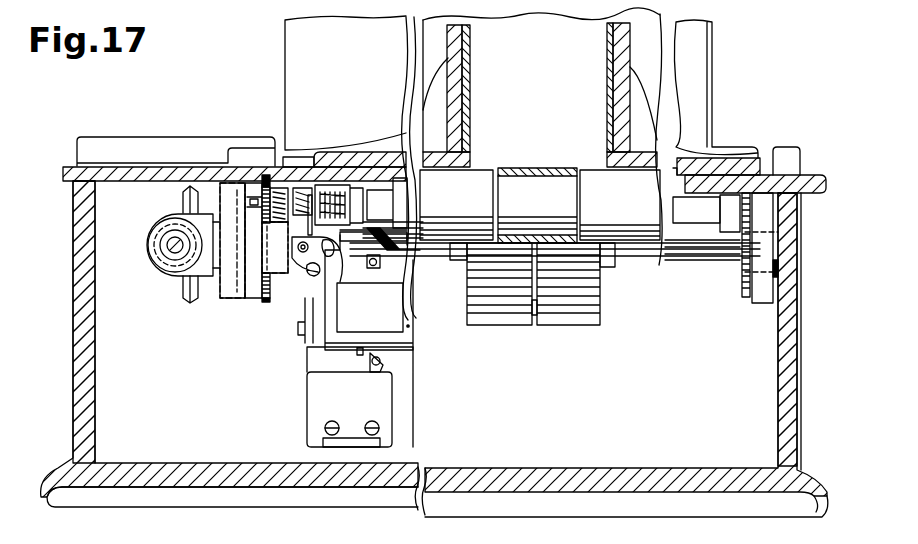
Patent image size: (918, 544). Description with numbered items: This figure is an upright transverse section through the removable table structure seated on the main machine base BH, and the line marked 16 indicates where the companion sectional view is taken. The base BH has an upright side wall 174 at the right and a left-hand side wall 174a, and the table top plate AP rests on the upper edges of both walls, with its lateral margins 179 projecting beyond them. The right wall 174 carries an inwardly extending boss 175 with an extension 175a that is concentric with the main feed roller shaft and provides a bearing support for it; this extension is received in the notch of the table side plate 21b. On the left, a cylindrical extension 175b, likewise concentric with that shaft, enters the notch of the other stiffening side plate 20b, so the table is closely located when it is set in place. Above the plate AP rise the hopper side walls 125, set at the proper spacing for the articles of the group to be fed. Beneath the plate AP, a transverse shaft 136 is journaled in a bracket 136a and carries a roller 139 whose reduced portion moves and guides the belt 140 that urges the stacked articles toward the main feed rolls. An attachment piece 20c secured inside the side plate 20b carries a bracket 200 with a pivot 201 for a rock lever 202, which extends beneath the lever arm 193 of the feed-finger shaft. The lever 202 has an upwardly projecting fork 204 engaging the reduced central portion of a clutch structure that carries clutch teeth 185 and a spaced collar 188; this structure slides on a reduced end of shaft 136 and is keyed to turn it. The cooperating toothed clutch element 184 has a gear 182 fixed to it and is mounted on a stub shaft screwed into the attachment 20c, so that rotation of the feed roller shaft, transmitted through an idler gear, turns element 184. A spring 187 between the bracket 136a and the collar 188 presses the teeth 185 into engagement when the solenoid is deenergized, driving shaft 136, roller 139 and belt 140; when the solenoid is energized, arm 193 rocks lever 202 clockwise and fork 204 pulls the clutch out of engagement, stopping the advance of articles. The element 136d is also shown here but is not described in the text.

The lateral margins 179 is at (63, 172).
The table top plate AP is at (133, 173).
The main machine base BH is at (66, 373).
The upright side wall 174 is at (787, 322).
The left-hand side wall 174a is at (84, 283).
The boss 175 is at (773, 261).
The extension 175a is at (780, 230).
The cylindrical extension 175b is at (230, 262).
The gear 182 is at (243, 133).
The toothed clutch element 184 is at (284, 186).
The clutch teeth 185 is at (297, 190).
The spring 187 is at (346, 210).
The hopper side walls 125 is at (608, 72).
The transverse shaft 136 is at (384, 192).
The journalling bracket 136a is at (388, 217).
The bearing block 136d is at (731, 236).
The roller 139 is at (479, 183).
The belt 140 is at (563, 233).
The collar 188 is at (327, 218).
The lever arm 193 is at (410, 251).
The bracket 200 is at (284, 275).
The pivot 201 is at (303, 252).
The rock lever 202 is at (397, 252).
The fork 204 is at (306, 225).
The side plate 20b is at (241, 306).
The attachment piece 20c is at (257, 303).
The side plate 21b is at (752, 308).
The section line 16 is at (312, 85).